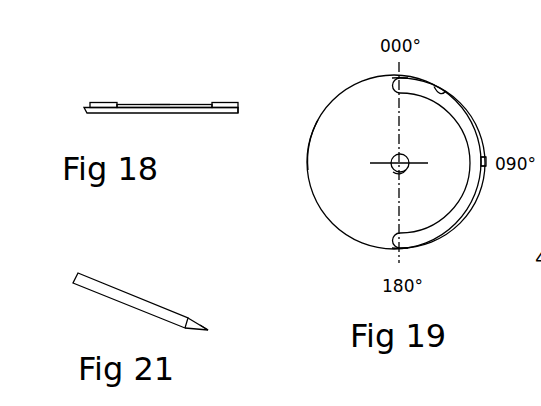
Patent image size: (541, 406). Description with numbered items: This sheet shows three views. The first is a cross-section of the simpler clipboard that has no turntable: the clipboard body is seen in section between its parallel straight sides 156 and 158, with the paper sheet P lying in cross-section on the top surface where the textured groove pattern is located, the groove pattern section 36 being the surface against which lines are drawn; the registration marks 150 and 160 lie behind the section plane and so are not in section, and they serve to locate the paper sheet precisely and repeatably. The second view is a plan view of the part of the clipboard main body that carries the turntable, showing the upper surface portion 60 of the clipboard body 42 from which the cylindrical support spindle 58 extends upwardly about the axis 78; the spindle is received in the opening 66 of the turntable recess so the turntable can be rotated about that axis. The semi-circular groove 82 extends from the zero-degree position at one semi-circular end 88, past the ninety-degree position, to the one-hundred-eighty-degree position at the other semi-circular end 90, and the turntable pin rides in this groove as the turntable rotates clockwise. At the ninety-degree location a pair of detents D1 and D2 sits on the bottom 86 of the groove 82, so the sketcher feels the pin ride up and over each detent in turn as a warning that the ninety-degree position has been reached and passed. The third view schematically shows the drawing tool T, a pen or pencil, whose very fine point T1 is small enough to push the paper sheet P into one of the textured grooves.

In FIG. 18, the textured groove pattern section 36 is at (142, 102).
In FIG. 18, the paper sheet P is at (160, 102).
In FIG. 18, the registration mark 150 is at (220, 102).
In FIG. 18, the registration mark 160 is at (97, 102).
In FIG. 18, the straight side 156 is at (85, 109).
In FIG. 18, the straight side 158 is at (238, 110).
In FIG. 19, the disc 42 is at (308, 181).
In FIG. 19, the upper surface portion 60 is at (330, 140).
In FIG. 19, the bottom of the arcuate groove 86 is at (474, 122).
In FIG. 19, the groove 82 is at (437, 86).
In FIG. 19, the groove end 88 is at (388, 76).
In FIG. 19, the groove end 90 is at (387, 247).
In FIG. 19, the detent D1 is at (486, 153).
In FIG. 19, the detent D2 is at (486, 175).
In FIG. 19, the axis 78 is at (394, 156).
In FIG. 19, the opening 66 is at (406, 158).
In FIG. 19, the support spindle 58 is at (393, 172).
In FIG. 21, the drawing tool T is at (117, 288).
In FIG. 21, the fine point T1 is at (208, 330).